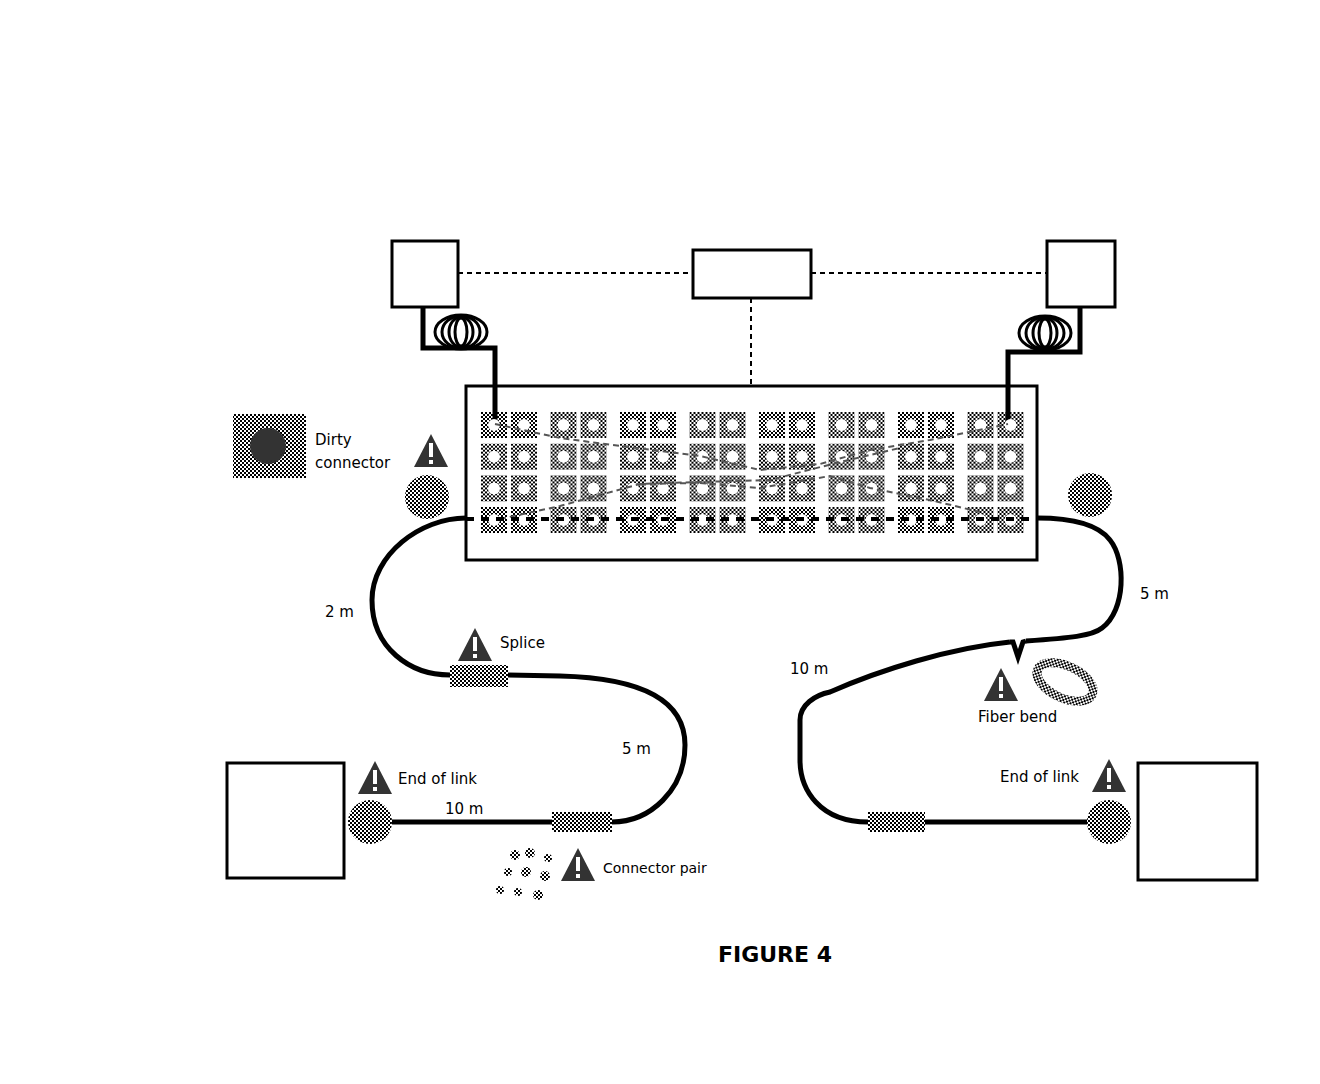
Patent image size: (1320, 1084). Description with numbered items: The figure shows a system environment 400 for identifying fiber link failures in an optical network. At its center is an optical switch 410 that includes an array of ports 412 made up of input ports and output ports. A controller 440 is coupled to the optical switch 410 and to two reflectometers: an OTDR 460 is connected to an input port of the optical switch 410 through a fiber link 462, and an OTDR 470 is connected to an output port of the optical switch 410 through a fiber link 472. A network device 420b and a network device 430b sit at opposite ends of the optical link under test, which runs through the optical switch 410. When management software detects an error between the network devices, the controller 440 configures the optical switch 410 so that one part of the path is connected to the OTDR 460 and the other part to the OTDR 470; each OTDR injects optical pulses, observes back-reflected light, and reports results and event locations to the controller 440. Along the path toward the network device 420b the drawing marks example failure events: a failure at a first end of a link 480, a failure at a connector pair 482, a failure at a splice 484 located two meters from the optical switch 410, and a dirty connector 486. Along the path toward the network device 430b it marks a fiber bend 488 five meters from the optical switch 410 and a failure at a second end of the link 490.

The system environment 400 is at (320, 75).
The optical switch 410 is at (701, 386).
The array of ports 412 is at (940, 412).
The controller 440 is at (728, 250).
The OTDR 460 is at (403, 241).
The fiber link 462 is at (437, 350).
The OTDR 470 is at (1098, 241).
The fiber link 472 is at (1065, 355).
The network device 420b is at (258, 763).
The network device 430b is at (1227, 763).
The first end of a link 480 is at (393, 826).
The connector pair 482 is at (588, 788).
The splice 484 is at (480, 703).
The dirty connector 486 is at (372, 519).
The fiber bend 488 is at (1017, 620).
The second end of the link 490 is at (1081, 826).